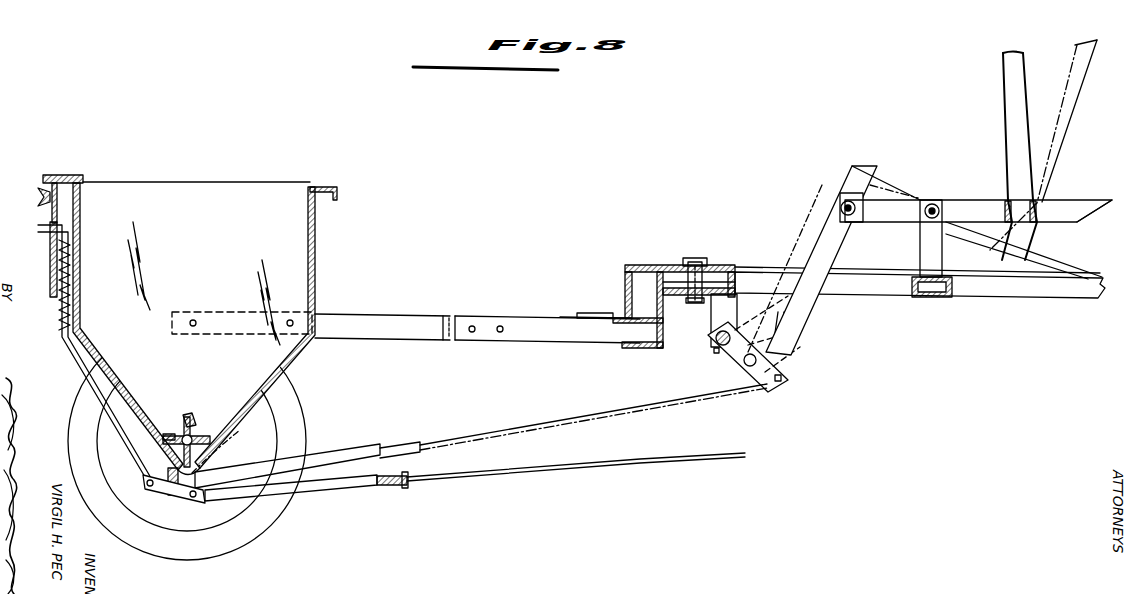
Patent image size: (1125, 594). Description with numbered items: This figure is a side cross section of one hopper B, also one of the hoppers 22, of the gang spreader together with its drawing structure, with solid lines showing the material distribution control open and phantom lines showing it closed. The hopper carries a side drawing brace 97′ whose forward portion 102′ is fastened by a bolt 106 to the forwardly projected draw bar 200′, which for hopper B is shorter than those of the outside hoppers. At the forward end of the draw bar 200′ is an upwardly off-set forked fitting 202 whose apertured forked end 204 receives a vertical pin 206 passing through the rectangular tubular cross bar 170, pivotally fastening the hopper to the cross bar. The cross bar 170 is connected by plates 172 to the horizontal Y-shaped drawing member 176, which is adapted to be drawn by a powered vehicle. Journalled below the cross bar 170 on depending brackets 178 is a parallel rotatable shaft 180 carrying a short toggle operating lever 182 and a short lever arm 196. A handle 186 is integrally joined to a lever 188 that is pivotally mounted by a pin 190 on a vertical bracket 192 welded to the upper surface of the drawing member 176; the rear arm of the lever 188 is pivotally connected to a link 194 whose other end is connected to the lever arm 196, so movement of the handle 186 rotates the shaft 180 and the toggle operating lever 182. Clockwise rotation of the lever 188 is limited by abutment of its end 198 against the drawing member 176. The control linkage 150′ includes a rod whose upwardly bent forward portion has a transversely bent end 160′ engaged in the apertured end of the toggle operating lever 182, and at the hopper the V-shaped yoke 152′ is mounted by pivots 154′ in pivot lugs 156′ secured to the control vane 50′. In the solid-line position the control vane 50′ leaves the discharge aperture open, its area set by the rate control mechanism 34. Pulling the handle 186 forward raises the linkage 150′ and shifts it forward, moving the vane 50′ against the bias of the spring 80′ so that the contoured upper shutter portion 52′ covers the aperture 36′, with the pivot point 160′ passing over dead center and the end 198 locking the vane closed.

The hopper B is at (205, 205).
The hopper 22 is at (282, 198).
The rate control mechanism 34 is at (66, 162).
The spring 80′ is at (75, 247).
The side drawing brace 97′ is at (418, 320).
The forward portion of brace 102′ is at (455, 318).
The bolt 106 is at (474, 332).
The draw bar 200′ is at (540, 322).
The forked fitting 202 is at (607, 316).
The forked end 204 is at (663, 263).
The vertical pin 206 is at (698, 258).
The cross bar 170 is at (724, 270).
The plate 172 is at (758, 272).
The drawing member 176 is at (1033, 292).
The depending bracket 178 is at (714, 312).
The shaft 180 is at (717, 356).
The transversely bent end 160′ is at (786, 378).
The lever arm 196 is at (790, 352).
The toggle operating lever 182 is at (792, 312).
The link 194 is at (808, 232).
The lever 188 is at (897, 190).
The pin 190 is at (938, 204).
The vertical bracket 192 is at (920, 245).
The handle 186 is at (1077, 47).
The end of lever 198 is at (1083, 205).
The V-shaped yoke 152′ is at (358, 438).
The control linkage 150′ is at (421, 495).
The pivot lug 156′ is at (212, 472).
The contoured upper shutter portion 52′ is at (232, 458).
The aperture 36′ is at (197, 442).
The control vane 50′ is at (172, 498).
The pivot 154′ is at (197, 502).